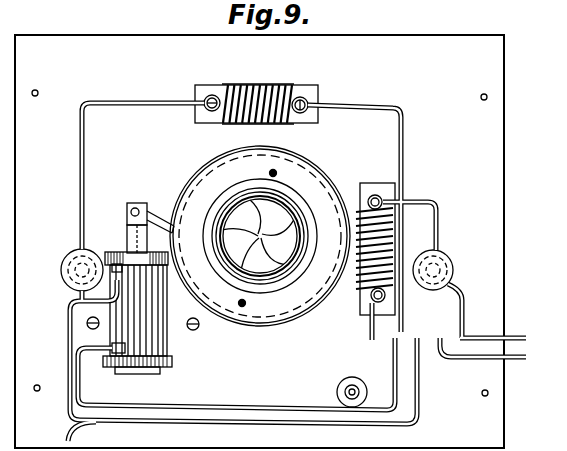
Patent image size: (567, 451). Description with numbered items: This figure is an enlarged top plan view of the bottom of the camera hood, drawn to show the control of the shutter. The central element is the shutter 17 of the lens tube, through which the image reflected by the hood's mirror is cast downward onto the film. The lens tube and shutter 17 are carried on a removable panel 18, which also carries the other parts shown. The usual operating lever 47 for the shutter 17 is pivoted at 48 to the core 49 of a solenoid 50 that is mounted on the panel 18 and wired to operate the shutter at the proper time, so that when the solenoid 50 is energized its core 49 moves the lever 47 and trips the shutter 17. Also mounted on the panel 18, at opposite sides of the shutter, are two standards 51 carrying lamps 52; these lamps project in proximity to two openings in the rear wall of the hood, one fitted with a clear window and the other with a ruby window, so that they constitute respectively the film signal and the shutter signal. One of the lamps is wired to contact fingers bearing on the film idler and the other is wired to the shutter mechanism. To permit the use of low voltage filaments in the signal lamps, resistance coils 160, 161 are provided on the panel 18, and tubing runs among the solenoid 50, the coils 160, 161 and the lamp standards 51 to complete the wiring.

The removable panel 18 is at (487, 182).
The shutter 17 is at (279, 311).
The resistance coil 161 is at (245, 125).
The resistance coil 160 is at (356, 280).
The lamp 52 is at (82, 250).
The standard 51 is at (65, 267).
The solenoid 50 is at (155, 339).
The pivot 48 is at (130, 212).
The operating lever 47 is at (158, 217).
The core 49 is at (135, 232).